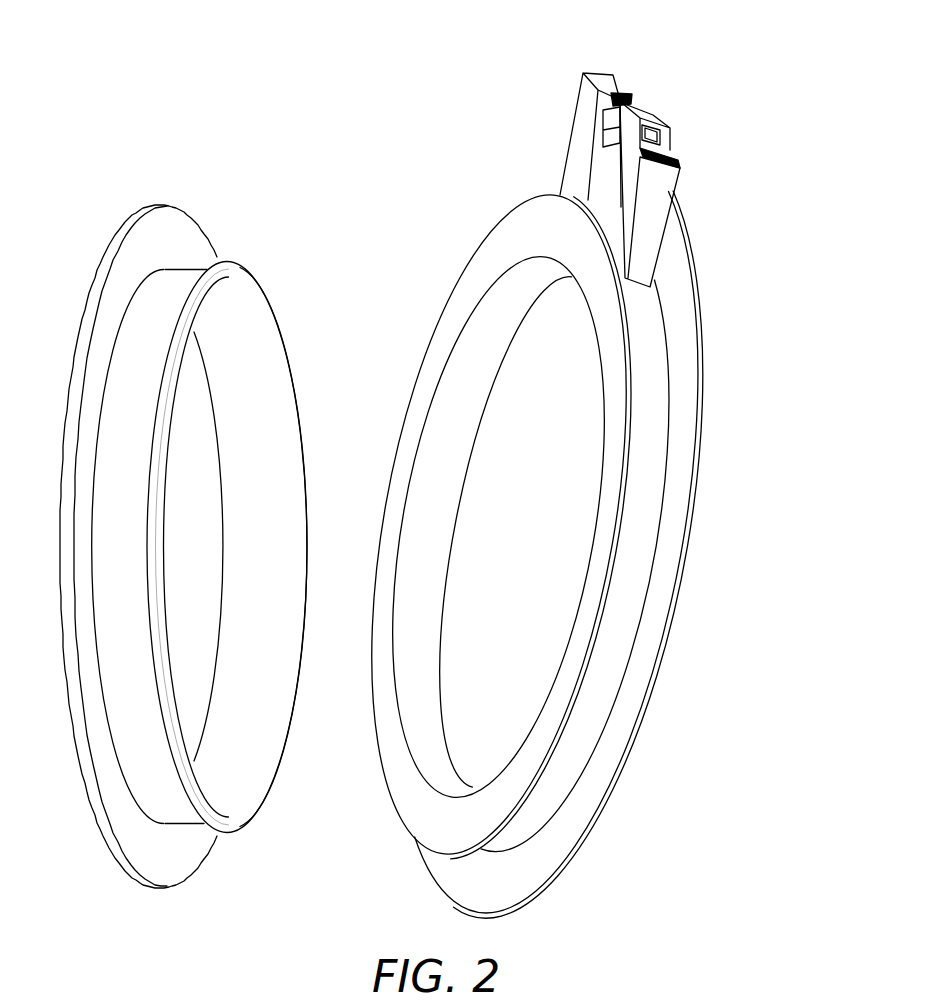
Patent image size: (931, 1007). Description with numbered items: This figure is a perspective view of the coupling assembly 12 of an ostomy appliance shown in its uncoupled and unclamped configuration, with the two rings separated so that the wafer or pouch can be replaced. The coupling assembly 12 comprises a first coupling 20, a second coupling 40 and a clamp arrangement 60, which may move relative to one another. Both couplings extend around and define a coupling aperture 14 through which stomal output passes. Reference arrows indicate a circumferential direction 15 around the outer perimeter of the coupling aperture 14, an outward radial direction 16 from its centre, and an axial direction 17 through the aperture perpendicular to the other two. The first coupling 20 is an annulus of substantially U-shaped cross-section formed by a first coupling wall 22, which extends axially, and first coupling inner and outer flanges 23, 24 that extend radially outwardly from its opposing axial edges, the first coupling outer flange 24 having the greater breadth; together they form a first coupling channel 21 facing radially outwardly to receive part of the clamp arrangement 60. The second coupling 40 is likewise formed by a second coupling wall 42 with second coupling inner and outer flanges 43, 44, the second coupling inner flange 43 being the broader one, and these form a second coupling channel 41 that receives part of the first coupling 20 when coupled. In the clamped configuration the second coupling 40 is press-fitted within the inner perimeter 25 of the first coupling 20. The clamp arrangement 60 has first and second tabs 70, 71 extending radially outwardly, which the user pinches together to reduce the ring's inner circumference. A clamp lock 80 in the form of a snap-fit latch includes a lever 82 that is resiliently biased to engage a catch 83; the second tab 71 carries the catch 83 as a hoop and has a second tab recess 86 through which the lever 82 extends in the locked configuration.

The coupling assembly 12 is at (152, 148).
The coupling aperture 14 is at (206, 540).
The circumferential direction 15 is at (724, 452).
The outward radial direction 16 is at (468, 523).
The axial direction 17 is at (497, 530).
The first coupling 20 is at (628, 760).
The first coupling channel 21 is at (690, 327).
The first coupling wall 22 is at (505, 353).
The first coupling inner flange 23 is at (385, 748).
The first coupling outer flange 24 is at (652, 672).
The inner perimeter 25 is at (472, 420).
The second coupling 40 is at (98, 833).
The second coupling channel 41 is at (172, 288).
The second coupling wall 42 is at (258, 330).
The second coupling inner flange 43 is at (125, 228).
The second coupling outer flange 44 is at (238, 828).
The clamp arrangement 60 is at (768, 119).
The first tab 70 is at (583, 136).
The second tab 71 is at (678, 192).
The clamp lock 80 is at (674, 90).
The lever 82 is at (617, 120).
The catch 83 is at (670, 134).
The second tab recess 86 is at (678, 161).